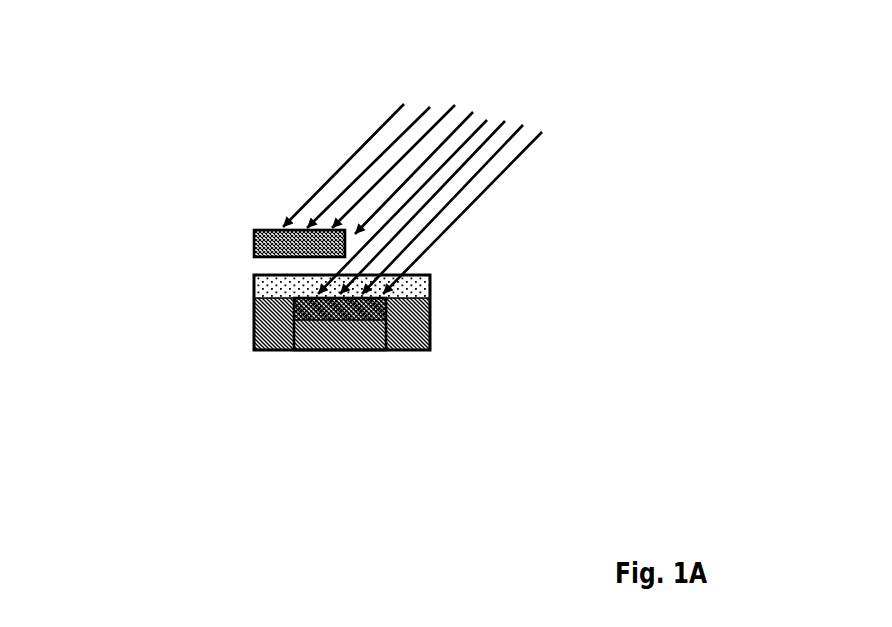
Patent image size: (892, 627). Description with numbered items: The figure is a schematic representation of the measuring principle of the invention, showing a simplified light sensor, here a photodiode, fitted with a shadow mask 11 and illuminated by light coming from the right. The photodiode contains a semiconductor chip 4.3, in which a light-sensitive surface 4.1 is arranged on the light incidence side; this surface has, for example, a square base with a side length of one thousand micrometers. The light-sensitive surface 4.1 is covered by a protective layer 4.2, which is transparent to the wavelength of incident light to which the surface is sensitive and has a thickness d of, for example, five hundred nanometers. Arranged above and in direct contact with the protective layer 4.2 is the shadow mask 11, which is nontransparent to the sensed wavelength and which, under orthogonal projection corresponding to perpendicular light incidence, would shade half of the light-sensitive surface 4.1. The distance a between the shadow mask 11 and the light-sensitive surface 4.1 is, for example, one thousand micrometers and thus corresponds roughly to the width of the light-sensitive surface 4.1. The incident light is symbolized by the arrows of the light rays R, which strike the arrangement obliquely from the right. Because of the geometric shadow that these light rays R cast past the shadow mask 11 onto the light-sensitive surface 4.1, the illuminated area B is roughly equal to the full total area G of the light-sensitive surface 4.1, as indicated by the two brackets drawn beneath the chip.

The shadow mask 11 is at (268, 233).
The light-sensitive surface 4.1 is at (295, 317).
The protective layer 4.2 is at (268, 285).
The semiconductor chip 4.3 is at (296, 305).
The light rays R is at (412, 182).
The distance between the shadow mask and the light-sensitive surface a is at (248, 255).
The thickness of the protective layer d is at (432, 275).
The illuminated area B is at (385, 350).
The total area of the light-sensitive surface G is at (296, 350).